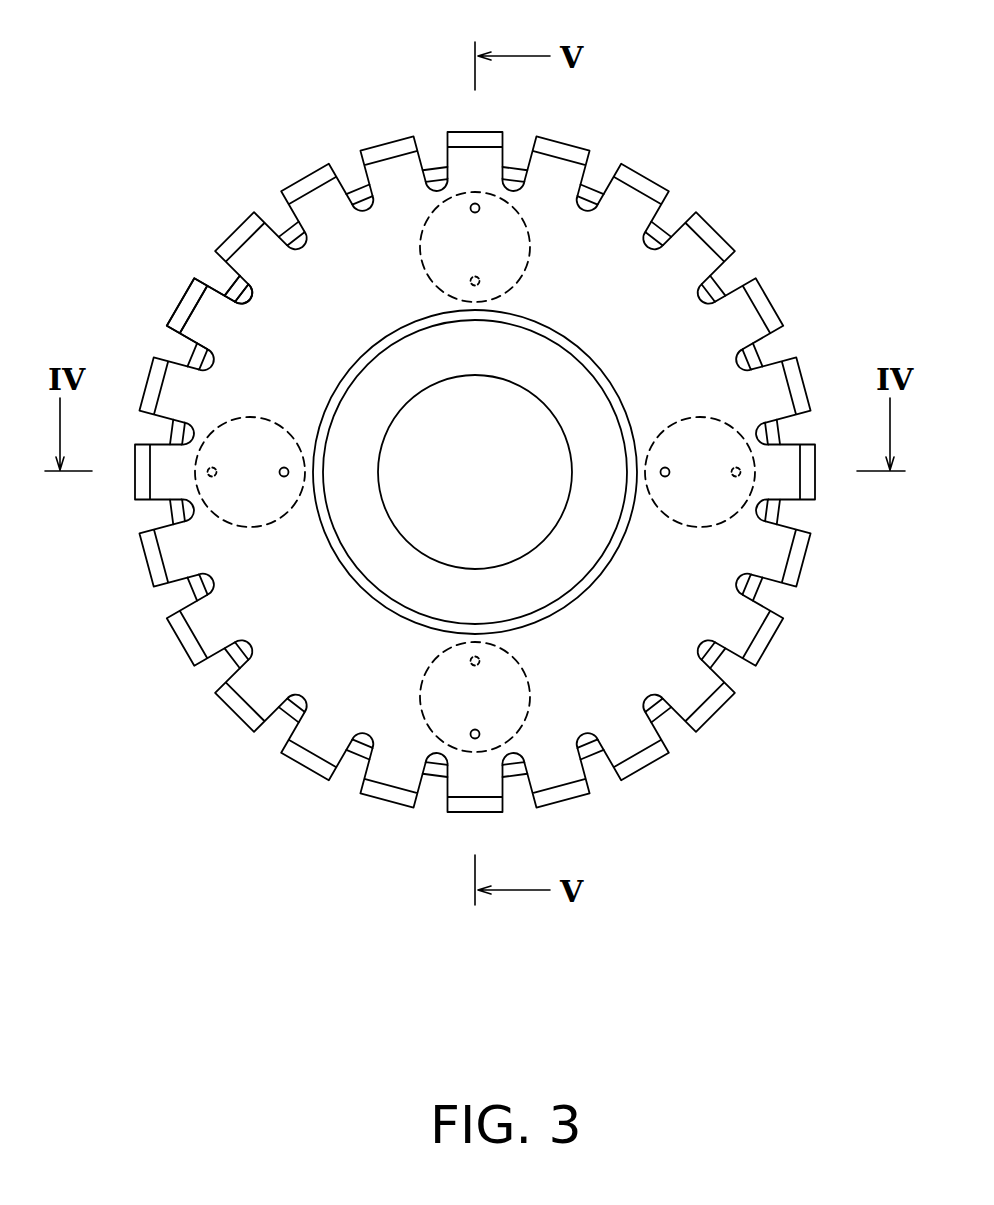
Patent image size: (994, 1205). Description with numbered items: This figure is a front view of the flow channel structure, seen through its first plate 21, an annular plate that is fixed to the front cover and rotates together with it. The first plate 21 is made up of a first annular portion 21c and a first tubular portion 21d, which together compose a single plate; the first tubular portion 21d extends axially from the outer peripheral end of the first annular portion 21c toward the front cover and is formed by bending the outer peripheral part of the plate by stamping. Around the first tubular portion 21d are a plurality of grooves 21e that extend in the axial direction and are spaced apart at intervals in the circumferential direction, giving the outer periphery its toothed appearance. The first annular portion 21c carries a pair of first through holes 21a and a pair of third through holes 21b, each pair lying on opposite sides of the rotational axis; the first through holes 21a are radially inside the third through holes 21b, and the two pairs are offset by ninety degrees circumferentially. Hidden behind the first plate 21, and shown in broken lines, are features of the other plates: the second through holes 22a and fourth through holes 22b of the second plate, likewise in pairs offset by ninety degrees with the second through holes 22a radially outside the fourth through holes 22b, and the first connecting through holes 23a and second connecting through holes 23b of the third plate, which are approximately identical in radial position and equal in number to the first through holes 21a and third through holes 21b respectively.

The first plate 21 is at (791, 286).
The first through holes 21a is at (279, 472).
The third through holes 21b is at (478, 205).
The first annular portion 21c is at (242, 360).
The first tubular portion 21d is at (182, 300).
The grooves 21e is at (203, 283).
The second through holes 22a is at (206, 476).
The fourth through holes 22b is at (480, 278).
The first connecting through holes 23a is at (262, 517).
The second connecting through holes 23b is at (433, 210).